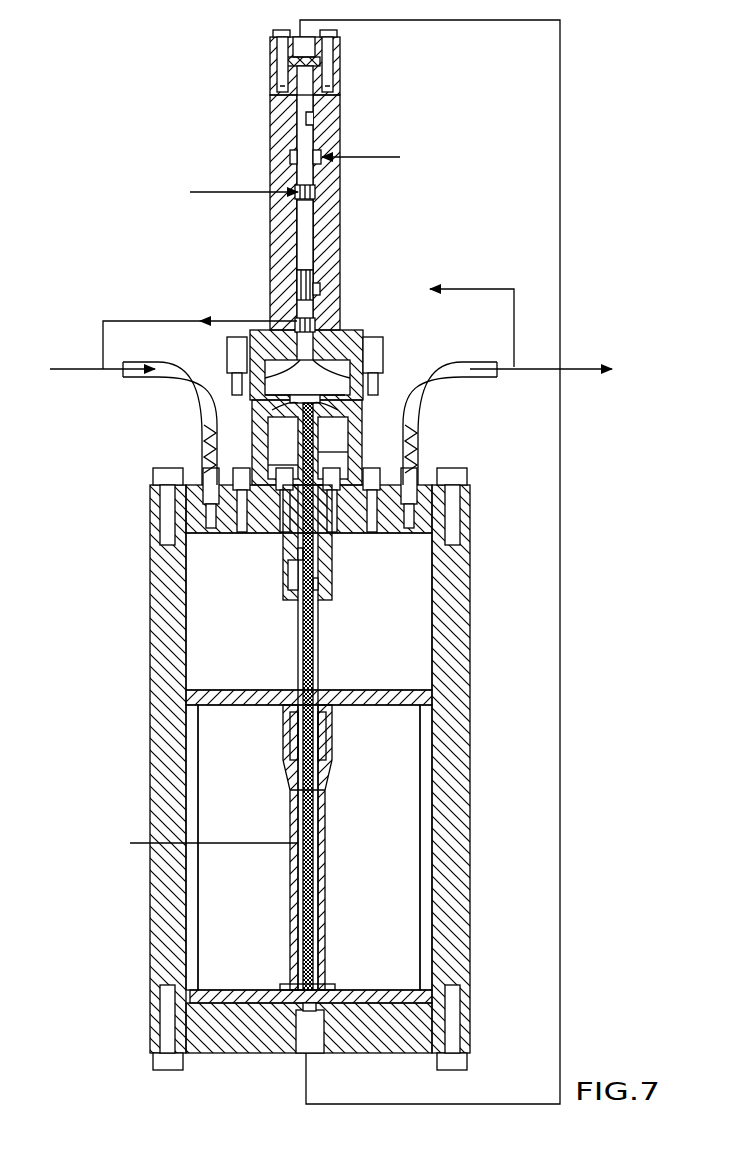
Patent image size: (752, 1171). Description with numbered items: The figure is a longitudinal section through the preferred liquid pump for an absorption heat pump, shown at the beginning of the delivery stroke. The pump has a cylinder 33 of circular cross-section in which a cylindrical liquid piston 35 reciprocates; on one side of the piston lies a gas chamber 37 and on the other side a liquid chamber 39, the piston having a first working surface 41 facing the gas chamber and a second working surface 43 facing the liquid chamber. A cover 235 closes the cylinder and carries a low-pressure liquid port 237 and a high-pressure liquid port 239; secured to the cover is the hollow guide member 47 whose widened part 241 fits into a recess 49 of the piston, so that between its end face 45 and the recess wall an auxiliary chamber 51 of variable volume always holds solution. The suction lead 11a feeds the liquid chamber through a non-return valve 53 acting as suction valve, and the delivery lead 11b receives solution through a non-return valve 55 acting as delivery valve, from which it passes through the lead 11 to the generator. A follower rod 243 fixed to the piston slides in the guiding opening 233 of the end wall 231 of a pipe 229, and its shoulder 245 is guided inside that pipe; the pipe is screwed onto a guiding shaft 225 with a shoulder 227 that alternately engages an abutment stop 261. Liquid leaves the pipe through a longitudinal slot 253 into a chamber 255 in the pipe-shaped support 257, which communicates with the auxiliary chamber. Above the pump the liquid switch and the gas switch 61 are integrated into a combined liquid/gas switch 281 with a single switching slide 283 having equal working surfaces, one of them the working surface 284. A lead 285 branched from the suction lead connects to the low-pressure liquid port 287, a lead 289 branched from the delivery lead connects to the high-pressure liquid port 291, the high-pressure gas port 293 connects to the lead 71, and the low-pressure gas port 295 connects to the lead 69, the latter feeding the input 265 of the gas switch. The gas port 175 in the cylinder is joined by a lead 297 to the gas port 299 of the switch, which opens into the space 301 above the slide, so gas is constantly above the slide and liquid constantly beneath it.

The lead 11 is at (73, 375).
The suction lead 11a is at (170, 375).
The delivery lead 11b is at (450, 423).
The cylinder 33 is at (452, 631).
The liquid piston 35 is at (434, 916).
The gas chamber 37 is at (240, 1003).
The liquid chamber 39 is at (410, 584).
The first working surface 41 is at (367, 1003).
The second working surface 43 is at (244, 690).
The end face 45 is at (325, 812).
The guide member 47 is at (293, 577).
The recess 49 is at (297, 890).
The auxiliary chamber 51 is at (203, 841).
The non-return valve 53 is at (205, 443).
The non-return valve 55 is at (416, 443).
The gas switch 61 is at (446, 222).
The lead 69 is at (396, 157).
The lead 71 is at (229, 191).
The gas port 175 is at (306, 1032).
The guiding shaft 225 is at (282, 395).
The shoulder 227 is at (278, 408).
The pipe 229 is at (322, 455).
The end wall 231 is at (322, 585).
The guiding opening 233 is at (290, 596).
The cover 235 is at (262, 530).
The low-pressure liquid port 237 is at (215, 530).
The high-pressure liquid port 239 is at (412, 530).
The widened part 241 is at (300, 798).
The follower rod 243 is at (310, 641).
The shoulder 245 is at (320, 557).
The longitudinal slot 253 is at (322, 415).
The chamber 255 is at (285, 461).
The pipe-shaped support 257 is at (275, 443).
The abutment stop 261 is at (325, 398).
The input 265 is at (330, 348).
The combined liquid/gas switch 281 is at (306, 407).
The switching slide 283 is at (300, 240).
The working surface 284 is at (315, 118).
The lead 285 is at (150, 321).
The low-pressure liquid port 287 is at (298, 325).
The lead 289 is at (448, 289).
The high-pressure liquid port 291 is at (337, 284).
The high-pressure gas port 293 is at (285, 186).
The low-pressure gas port 295 is at (320, 152).
The lead 297 is at (513, 28).
The gas port 299 is at (302, 40).
The space 301 is at (298, 106).